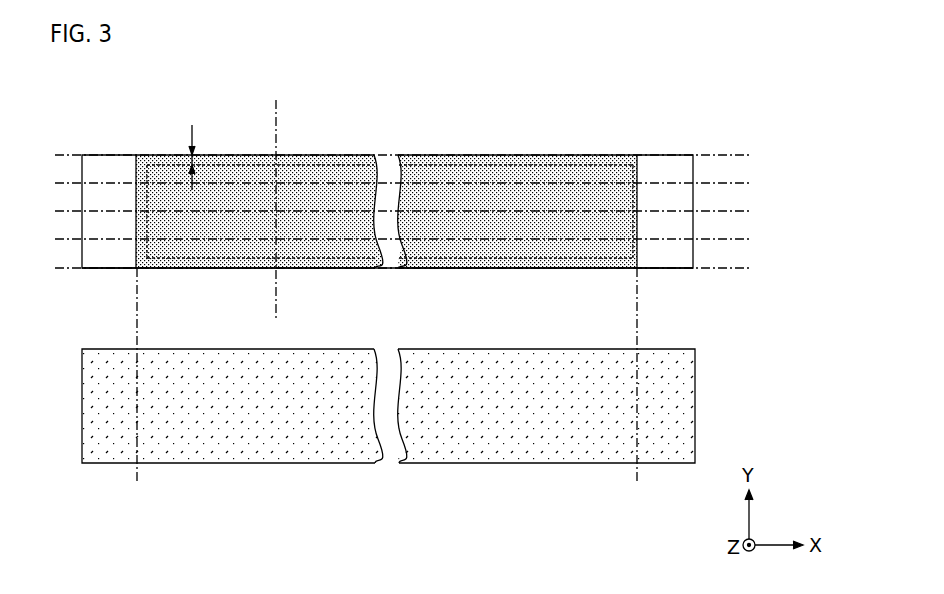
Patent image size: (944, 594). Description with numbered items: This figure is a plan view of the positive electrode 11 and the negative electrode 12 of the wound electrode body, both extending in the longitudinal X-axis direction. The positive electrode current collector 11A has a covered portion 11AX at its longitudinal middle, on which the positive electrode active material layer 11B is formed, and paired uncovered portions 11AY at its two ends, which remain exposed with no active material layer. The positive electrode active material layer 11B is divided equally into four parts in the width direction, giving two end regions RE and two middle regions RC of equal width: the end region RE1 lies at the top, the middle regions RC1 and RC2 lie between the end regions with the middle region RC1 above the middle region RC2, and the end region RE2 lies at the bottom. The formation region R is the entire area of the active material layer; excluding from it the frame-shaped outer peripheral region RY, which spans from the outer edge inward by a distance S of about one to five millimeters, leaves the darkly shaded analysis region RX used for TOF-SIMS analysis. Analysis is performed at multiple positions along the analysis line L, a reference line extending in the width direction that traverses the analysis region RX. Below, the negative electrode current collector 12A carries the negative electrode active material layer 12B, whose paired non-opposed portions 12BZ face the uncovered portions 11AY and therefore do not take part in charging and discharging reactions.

The positive electrode 11 is at (387, 188).
The uncovered portions 11AY is at (108, 185).
The positive electrode current collector 11A is at (390, 168).
The covered portion 11AX is at (342, 162).
The positive electrode active material layer 11B is at (440, 165).
The distance S is at (196, 162).
The formation region R is at (390, 211).
The analysis region RX is at (390, 211).
The outer peripheral region RY is at (528, 268).
The end regions RE is at (464, 169).
The end region RE1 is at (755, 156).
The end region RE2 is at (755, 240).
The middle regions RC is at (464, 197).
The middle region RC1 is at (755, 184).
The middle region RC2 is at (755, 212).
The analysis line L is at (278, 294).
The negative electrode 12 is at (388, 459).
The negative electrode current collector 12A is at (262, 445).
The negative electrode active material layer 12B is at (428, 445).
The non-opposed portions 12BZ is at (112, 445).